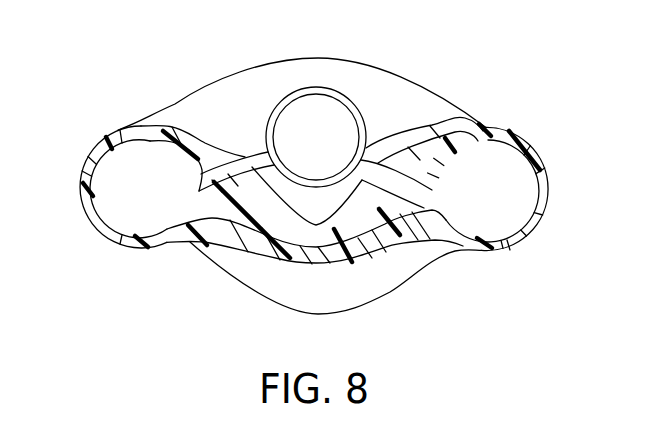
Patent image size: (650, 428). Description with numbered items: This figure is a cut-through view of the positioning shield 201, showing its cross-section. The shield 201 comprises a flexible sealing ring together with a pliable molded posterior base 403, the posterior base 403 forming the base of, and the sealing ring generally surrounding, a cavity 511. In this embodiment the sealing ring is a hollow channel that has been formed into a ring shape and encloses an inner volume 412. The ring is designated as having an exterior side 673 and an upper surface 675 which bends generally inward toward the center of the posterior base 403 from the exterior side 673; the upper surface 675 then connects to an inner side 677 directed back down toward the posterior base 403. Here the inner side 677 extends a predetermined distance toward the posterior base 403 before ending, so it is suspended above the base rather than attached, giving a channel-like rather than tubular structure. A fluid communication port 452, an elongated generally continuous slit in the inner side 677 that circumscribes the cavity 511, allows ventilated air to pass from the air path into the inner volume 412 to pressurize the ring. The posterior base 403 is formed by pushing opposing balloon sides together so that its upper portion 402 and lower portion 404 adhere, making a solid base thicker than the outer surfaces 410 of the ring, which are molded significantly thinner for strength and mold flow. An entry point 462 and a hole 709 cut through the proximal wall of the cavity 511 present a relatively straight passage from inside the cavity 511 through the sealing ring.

The positioning shield 201 is at (532, 238).
The upper portion 402 is at (287, 248).
The posterior base 403 is at (313, 276).
The lower portion 404 is at (364, 260).
The outer surfaces 410 is at (84, 187).
The inner volume 412 is at (130, 157).
The fluid communication port 452 is at (252, 158).
The entry point 462 is at (300, 88).
The cavity 511 is at (376, 92).
The exterior side 673 is at (549, 172).
The upper surface 675 is at (487, 132).
The inner side 677 is at (457, 167).
The hole 709 is at (314, 88).